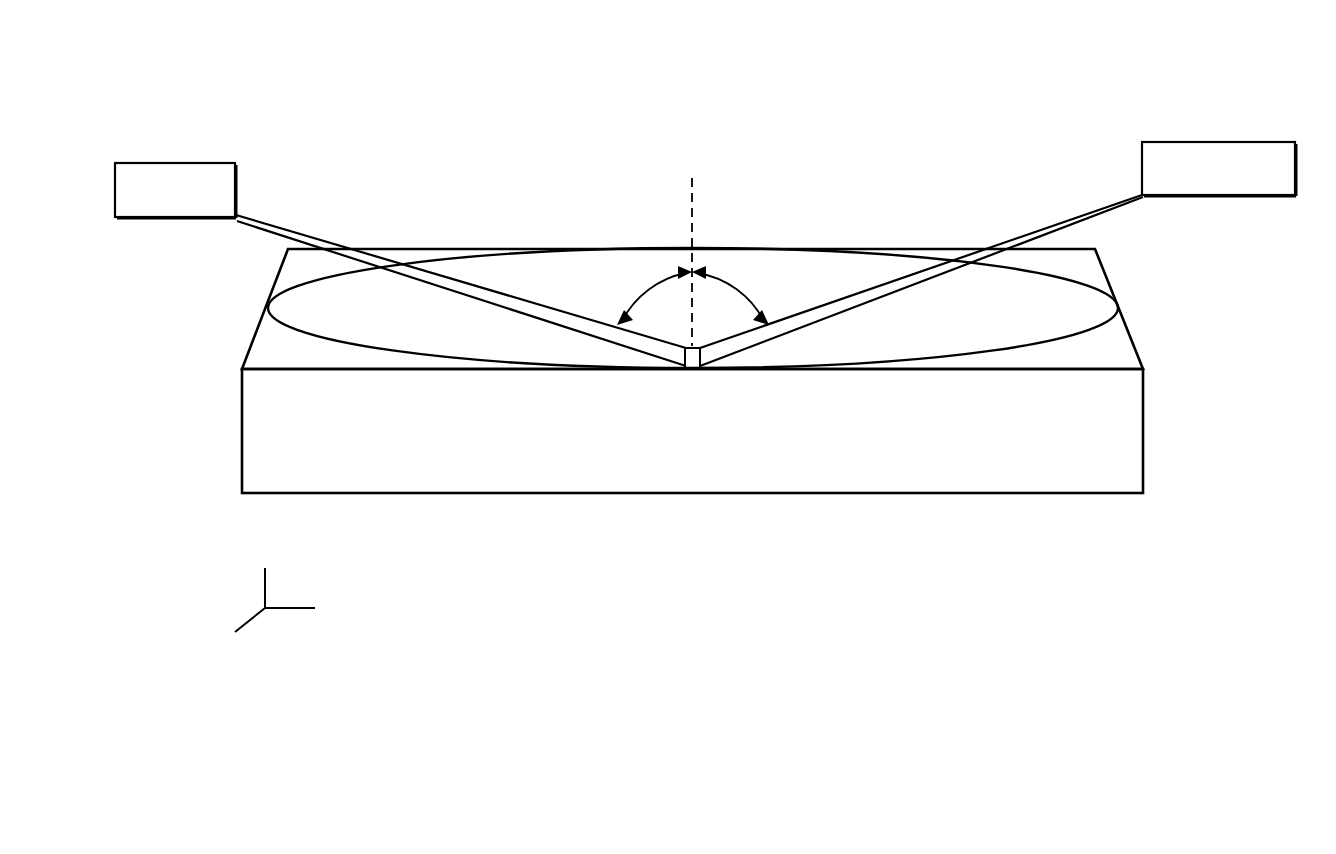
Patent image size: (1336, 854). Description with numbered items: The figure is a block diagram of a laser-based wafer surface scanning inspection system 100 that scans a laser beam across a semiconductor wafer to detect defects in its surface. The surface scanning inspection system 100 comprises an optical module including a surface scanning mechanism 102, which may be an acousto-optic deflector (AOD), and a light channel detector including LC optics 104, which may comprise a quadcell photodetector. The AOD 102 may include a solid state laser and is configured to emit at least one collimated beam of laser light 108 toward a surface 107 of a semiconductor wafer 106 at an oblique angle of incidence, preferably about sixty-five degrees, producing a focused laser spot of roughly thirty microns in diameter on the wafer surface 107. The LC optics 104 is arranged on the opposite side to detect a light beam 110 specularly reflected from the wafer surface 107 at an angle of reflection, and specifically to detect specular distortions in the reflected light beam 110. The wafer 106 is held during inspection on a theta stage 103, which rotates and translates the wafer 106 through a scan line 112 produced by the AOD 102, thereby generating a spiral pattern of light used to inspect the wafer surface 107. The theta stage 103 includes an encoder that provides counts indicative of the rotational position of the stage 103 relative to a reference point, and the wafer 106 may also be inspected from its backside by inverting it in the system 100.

The laser-based wafer surface scanning inspection system 100 is at (667, 102).
The surface scanning mechanism 102 is at (167, 163).
The theta stage 103 is at (1145, 413).
The LC optics 104 is at (1225, 142).
The semiconductor wafer 106 is at (770, 240).
The wafer surface 107 is at (579, 265).
The collimated beam of laser light 108 is at (258, 224).
The reflected light beam 110 is at (1103, 212).
The scan line 112 is at (692, 370).